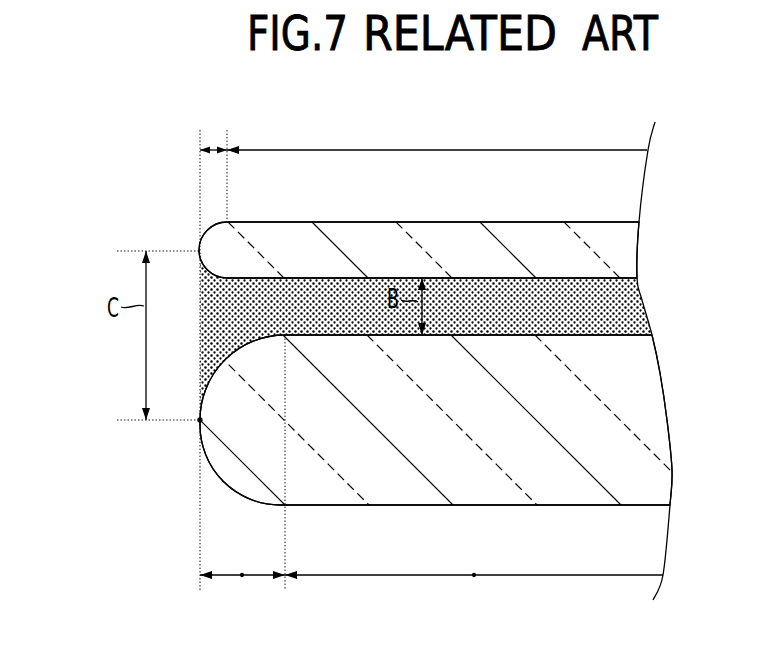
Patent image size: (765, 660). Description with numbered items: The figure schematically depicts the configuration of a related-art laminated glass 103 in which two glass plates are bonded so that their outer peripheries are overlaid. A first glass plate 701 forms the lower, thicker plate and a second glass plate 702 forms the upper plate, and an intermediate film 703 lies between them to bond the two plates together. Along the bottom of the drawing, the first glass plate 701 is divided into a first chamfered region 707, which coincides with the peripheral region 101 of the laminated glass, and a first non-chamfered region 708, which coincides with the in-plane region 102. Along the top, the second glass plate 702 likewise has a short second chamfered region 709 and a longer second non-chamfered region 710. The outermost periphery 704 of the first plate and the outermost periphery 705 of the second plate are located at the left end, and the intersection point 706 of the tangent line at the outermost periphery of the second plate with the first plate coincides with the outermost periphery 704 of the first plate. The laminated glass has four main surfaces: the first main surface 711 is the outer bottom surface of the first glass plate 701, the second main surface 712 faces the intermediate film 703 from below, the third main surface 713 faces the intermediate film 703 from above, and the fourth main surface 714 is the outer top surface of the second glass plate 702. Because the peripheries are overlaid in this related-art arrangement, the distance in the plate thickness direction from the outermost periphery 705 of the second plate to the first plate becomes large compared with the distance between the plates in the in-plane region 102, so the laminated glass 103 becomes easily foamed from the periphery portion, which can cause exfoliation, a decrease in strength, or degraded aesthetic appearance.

The peripheral region 101 is at (240, 577).
The in-plane region 102 is at (480, 577).
The laminated glass 103 is at (718, 176).
The first glass plate 701 is at (668, 418).
The second glass plate 702 is at (640, 248).
The intermediate film 703 is at (641, 310).
The outermost periphery of first plate 704 is at (199, 421).
The outermost periphery of second plate 705 is at (199, 249).
The intersection point of tangent line at outermost periphery of second plate with f 706 is at (177, 446).
The first chamfered region 707 is at (248, 600).
The first non-chamfered region 708 is at (486, 600).
The second chamfered region 709 is at (216, 148).
The second non-chamfered region 710 is at (420, 148).
The first main surface 711 is at (563, 506).
The second main surface 712 is at (559, 333).
The third main surface 713 is at (478, 280).
The fourth main surface 714 is at (478, 221).